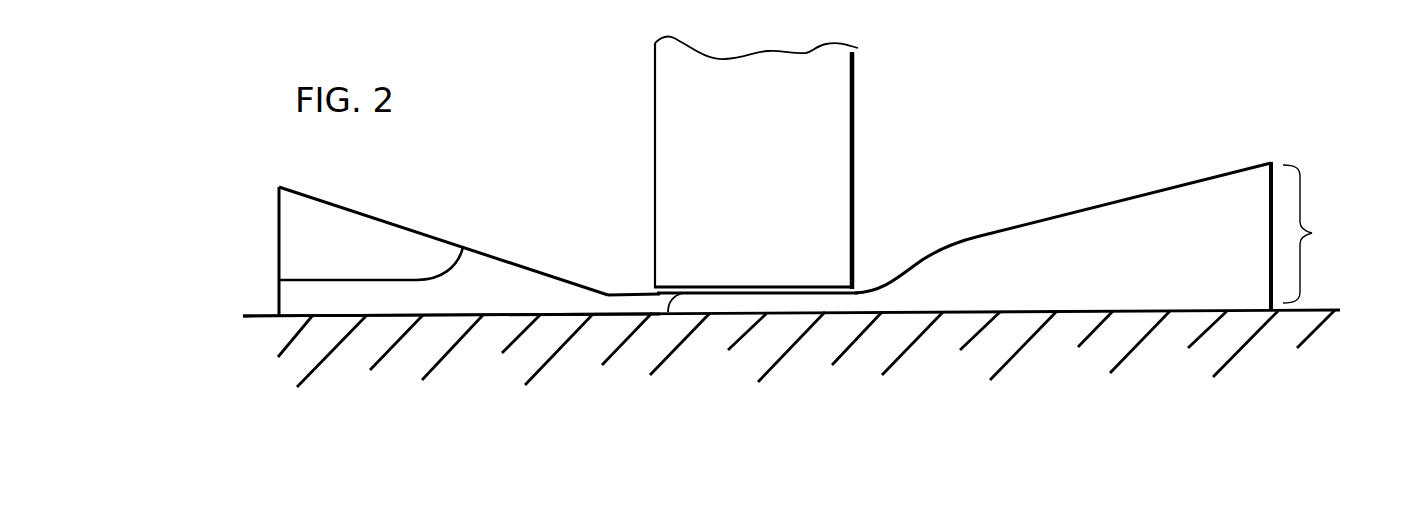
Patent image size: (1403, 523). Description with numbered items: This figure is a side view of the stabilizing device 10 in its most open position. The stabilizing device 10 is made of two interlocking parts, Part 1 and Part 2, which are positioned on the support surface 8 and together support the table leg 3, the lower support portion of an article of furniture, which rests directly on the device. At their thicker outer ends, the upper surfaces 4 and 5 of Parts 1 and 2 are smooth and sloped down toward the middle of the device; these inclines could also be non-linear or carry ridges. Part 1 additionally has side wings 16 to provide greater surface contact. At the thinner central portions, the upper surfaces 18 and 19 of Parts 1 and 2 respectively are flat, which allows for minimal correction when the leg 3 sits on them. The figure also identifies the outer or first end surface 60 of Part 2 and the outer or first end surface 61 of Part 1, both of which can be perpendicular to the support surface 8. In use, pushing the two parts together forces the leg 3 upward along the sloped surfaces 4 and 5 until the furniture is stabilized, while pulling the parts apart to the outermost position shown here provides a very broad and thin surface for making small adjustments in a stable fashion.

The first part 1 is at (503, 303).
The second part 2 is at (806, 349).
The table leg 3 is at (779, 162).
The upper surface of Part 1 4 is at (443, 228).
The upper surface of Part 2 5 is at (1152, 190).
The support surface 8 is at (802, 291).
The stabilizing device 10 is at (1316, 234).
The side wings 16 is at (343, 265).
The flat central upper surface of Part 1 18 is at (613, 256).
The flat central upper surface of Part 2 19 is at (807, 259).
The first end surface of Part 2 60 is at (1276, 180).
The first end surface of Part 1 61 is at (248, 251).